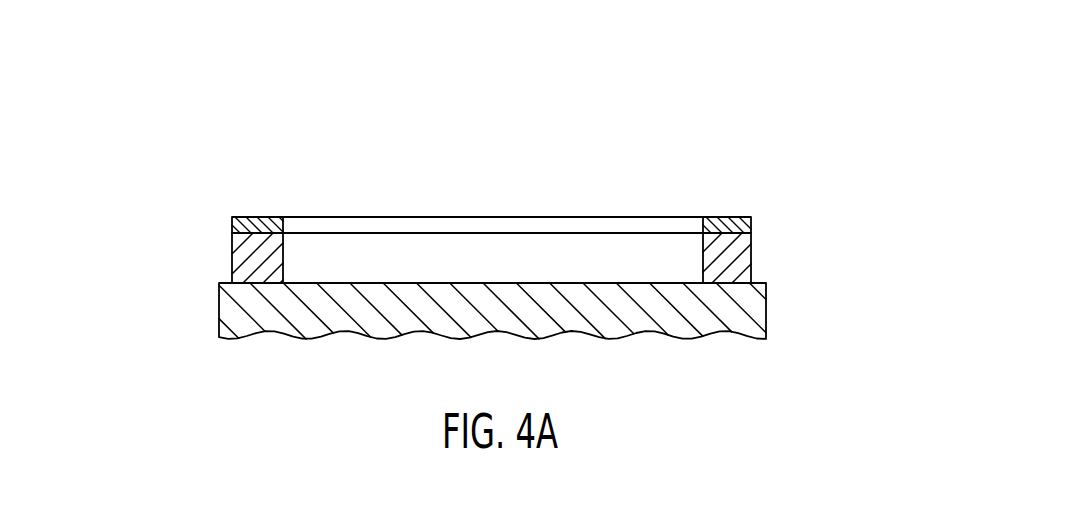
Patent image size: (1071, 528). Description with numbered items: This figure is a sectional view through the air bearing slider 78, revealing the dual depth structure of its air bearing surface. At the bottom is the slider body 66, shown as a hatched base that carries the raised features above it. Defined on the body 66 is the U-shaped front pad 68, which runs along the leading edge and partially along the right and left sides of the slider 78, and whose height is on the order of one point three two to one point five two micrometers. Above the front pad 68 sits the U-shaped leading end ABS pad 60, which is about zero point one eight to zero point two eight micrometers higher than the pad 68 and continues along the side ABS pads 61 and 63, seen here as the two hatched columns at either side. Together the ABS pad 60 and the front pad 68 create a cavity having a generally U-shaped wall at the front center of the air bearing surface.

The slider 78 is at (600, 127).
The leading end ABS pad 60 is at (400, 217).
The side ABS pad 63 is at (231, 218).
The side ABS pad 61 is at (735, 217).
The front pad 68 is at (230, 257).
The slider body 66 is at (767, 307).